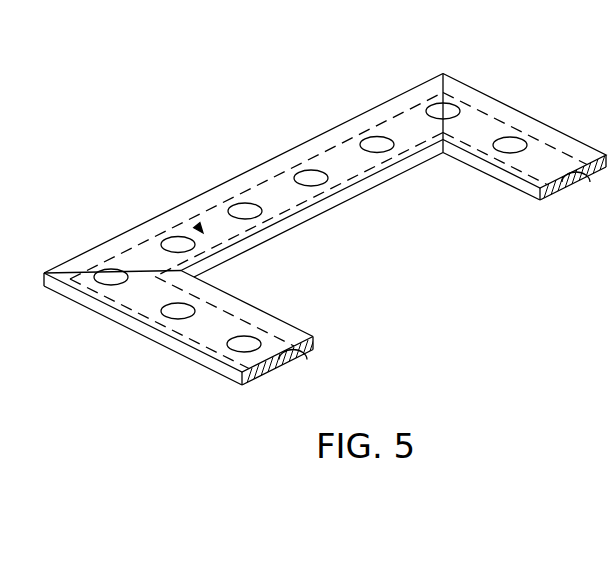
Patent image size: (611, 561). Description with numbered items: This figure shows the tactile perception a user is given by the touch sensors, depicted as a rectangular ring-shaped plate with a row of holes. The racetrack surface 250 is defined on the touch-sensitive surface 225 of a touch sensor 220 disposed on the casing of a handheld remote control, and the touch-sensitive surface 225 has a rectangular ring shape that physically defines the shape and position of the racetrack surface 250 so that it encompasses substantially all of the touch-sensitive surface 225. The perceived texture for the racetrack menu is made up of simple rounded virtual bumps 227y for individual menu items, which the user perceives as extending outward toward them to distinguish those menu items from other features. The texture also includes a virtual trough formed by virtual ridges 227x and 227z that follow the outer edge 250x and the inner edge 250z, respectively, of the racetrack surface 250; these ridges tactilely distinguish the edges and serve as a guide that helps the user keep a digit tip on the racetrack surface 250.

The racetrack surface 250 is at (475, 127).
The outer edge 250x is at (267, 178).
The inner edge 250z is at (418, 145).
The touch sensor 220 is at (382, 177).
The touch-sensitive surface 225 is at (203, 233).
The virtual ridge 227x is at (203, 364).
The virtual bump 227y is at (185, 310).
The virtual ridge 227z is at (292, 330).